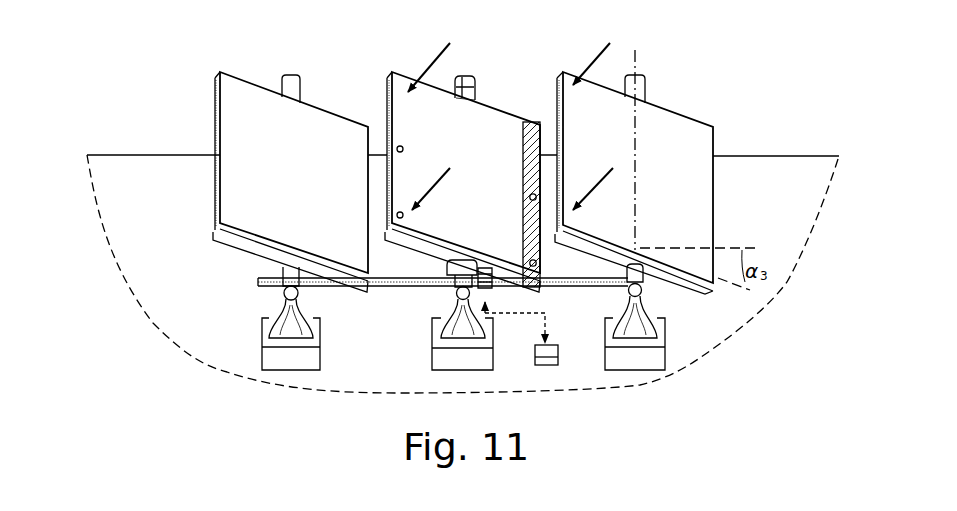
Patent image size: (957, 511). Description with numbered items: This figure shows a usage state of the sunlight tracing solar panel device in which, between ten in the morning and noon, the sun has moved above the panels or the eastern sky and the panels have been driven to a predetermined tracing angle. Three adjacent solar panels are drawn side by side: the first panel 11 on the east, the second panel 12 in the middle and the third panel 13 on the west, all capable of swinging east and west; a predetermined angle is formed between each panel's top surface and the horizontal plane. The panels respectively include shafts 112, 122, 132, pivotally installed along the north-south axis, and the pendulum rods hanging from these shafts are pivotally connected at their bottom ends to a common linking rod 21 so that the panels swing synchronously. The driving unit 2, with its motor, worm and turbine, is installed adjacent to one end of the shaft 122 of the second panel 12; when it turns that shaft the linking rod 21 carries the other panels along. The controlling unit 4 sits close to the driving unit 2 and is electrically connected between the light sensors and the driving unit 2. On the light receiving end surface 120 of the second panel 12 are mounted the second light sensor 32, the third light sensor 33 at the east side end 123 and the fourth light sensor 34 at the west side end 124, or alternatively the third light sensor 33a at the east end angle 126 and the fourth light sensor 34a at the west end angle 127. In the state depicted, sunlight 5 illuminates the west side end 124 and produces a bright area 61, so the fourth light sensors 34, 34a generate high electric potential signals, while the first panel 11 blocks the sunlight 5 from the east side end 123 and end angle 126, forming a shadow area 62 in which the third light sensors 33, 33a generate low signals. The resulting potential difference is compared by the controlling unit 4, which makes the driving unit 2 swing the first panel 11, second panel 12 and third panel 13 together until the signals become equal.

The driving unit 2 is at (440, 297).
The controlling unit 4 is at (548, 365).
The sunlight 5 is at (437, 62).
The first panel 11 is at (713, 206).
The second panel 12 is at (390, 108).
The third panel 13 is at (215, 108).
The linking rod 21 is at (265, 287).
The second light sensor 32 is at (460, 87).
The third light sensor 33 is at (536, 195).
The third light sensor 33a is at (537, 262).
The fourth light sensor 34 is at (397, 148).
The fourth light sensor 34a is at (397, 214).
The bright area 61 is at (405, 127).
The shadow area 62 is at (521, 214).
The shaft 112 is at (645, 85).
The light receiving end surface 120 is at (500, 115).
The shaft 122 is at (470, 77).
The east side end 123 is at (533, 143).
The west side end 124 is at (402, 175).
The end angle 126 is at (537, 288).
The end angle 127 is at (390, 218).
The shaft 132 is at (300, 84).